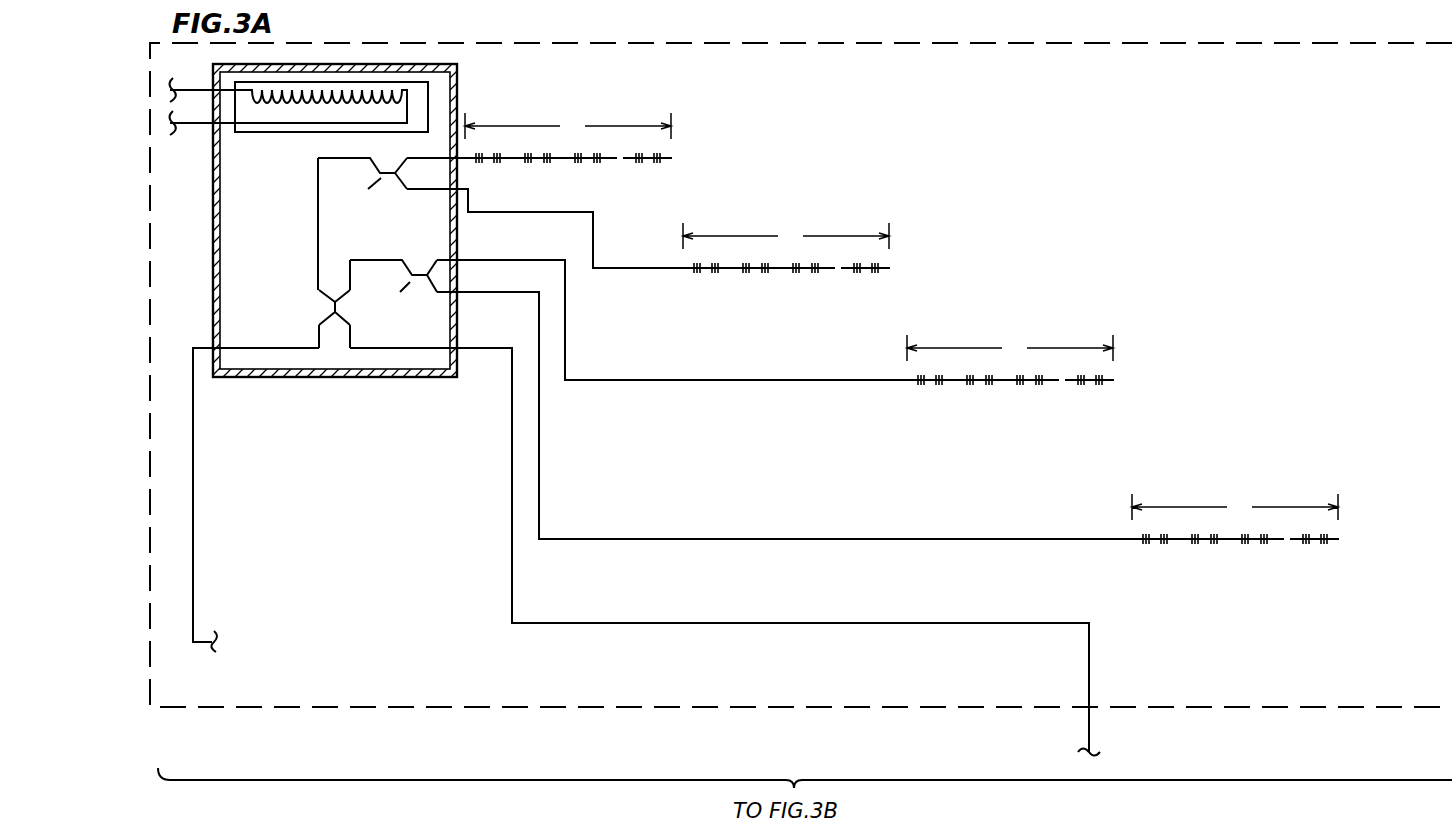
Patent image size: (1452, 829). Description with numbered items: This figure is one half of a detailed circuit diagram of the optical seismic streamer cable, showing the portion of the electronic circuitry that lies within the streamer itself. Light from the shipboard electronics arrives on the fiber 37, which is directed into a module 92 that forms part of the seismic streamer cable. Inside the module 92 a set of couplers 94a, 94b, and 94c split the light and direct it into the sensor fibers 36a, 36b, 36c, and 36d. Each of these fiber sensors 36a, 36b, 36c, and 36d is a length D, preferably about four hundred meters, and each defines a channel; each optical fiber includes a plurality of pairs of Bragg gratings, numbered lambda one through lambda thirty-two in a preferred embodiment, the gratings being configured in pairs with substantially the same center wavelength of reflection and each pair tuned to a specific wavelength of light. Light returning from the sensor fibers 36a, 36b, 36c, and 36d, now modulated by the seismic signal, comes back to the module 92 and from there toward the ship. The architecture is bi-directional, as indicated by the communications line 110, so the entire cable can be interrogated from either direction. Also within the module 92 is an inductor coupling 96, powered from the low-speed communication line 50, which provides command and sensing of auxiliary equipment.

The low-speed communication line 50 is at (203, 125).
The module 92 is at (392, 378).
The inductor coupling 96 is at (283, 134).
The coupler 94a is at (328, 305).
The coupler 94b is at (388, 176).
The coupler 94c is at (418, 278).
The fiber sensor 36a is at (610, 160).
The fiber sensor 36b is at (830, 272).
The fiber sensor 36c is at (1058, 383).
The fiber sensor 36d is at (1275, 541).
The communications line 110 is at (194, 522).
The fiber 37 is at (1089, 660).